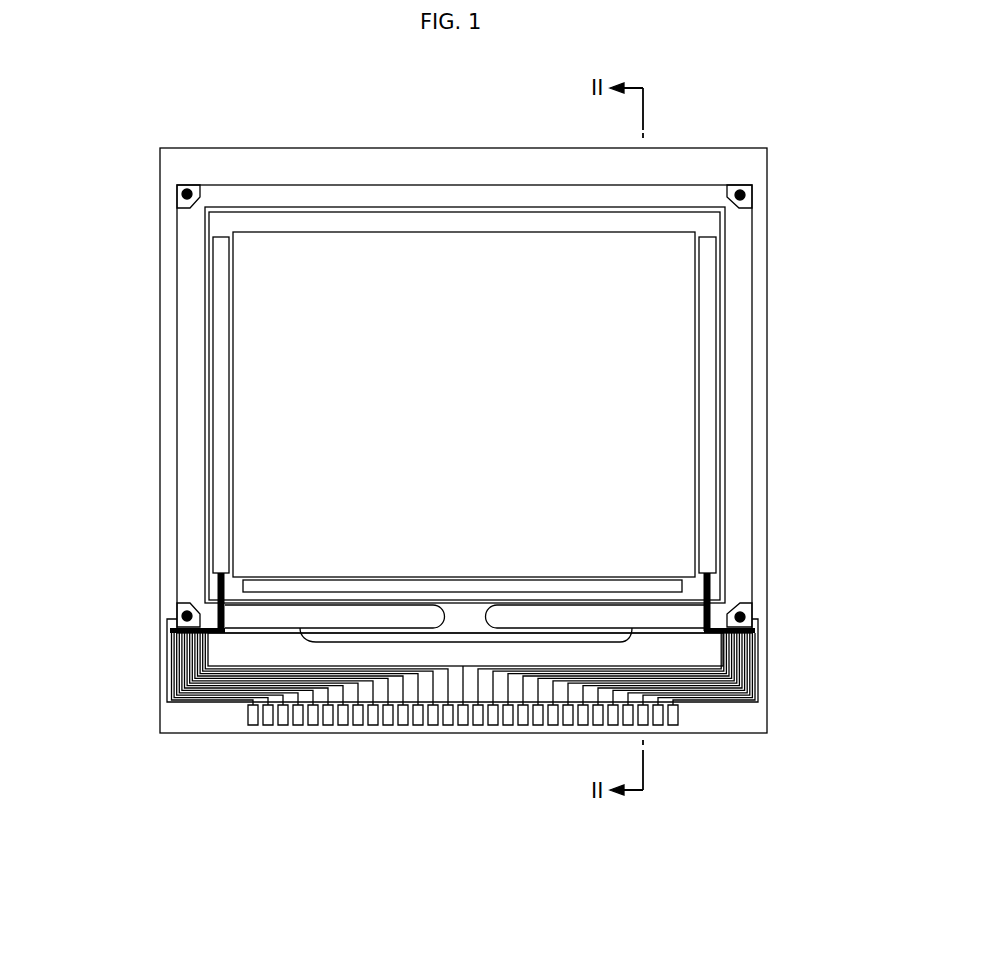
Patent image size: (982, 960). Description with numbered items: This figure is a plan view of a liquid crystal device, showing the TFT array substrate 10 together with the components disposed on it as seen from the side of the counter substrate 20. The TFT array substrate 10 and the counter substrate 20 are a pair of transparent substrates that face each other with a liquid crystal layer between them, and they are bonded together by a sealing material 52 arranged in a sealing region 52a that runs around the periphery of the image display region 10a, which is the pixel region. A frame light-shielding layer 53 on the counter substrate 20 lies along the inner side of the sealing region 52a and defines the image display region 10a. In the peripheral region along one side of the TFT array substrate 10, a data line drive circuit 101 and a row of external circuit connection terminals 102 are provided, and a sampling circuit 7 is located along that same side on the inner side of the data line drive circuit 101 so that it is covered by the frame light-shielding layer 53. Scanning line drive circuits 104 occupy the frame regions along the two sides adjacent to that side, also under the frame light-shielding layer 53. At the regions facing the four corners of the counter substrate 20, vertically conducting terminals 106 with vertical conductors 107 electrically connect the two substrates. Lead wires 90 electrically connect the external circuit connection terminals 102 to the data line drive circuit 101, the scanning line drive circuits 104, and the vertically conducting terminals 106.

The TFT array substrate 10 is at (285, 160).
The image display region 10a is at (280, 355).
The counter substrate 20 is at (487, 186).
The sealing material 52 is at (745, 305).
The sealing region 52a is at (753, 355).
The scanning line drive circuits 104 is at (220, 427).
The sampling circuit 7 is at (322, 585).
The frame light-shielding layer 53 is at (700, 585).
The lead wires 90 is at (188, 663).
The data line drive circuit 101 is at (233, 655).
The external circuit connection terminals 102 is at (428, 712).
The vertically conducting terminals 106 is at (190, 195).
The vertical conductors 107 is at (180, 613).